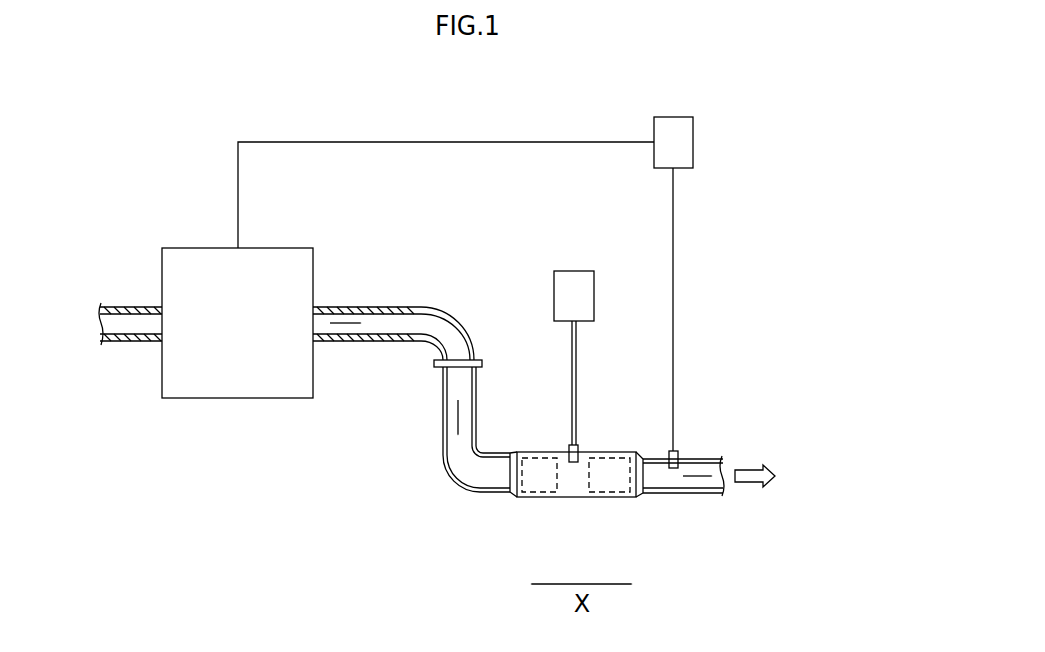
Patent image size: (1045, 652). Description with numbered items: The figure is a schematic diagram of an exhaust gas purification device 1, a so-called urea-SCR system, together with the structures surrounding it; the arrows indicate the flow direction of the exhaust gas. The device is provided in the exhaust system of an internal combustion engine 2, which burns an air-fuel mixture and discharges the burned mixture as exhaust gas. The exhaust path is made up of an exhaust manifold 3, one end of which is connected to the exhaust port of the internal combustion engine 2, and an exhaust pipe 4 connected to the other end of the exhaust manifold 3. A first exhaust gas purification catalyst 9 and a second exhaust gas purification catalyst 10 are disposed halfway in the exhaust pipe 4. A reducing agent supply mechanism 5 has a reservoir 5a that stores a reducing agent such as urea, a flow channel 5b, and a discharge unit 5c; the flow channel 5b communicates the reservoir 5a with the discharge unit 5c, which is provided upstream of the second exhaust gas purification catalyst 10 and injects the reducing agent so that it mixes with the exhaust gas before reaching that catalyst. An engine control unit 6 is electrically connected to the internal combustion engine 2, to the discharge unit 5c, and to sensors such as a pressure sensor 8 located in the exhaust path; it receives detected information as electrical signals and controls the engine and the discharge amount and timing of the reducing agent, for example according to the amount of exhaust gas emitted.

The exhaust gas purification device 1 is at (787, 131).
The internal combustion engine 2 is at (203, 403).
The exhaust manifold 3 is at (400, 307).
The exhaust pipe 4 is at (443, 410).
The reducing agent supply mechanism 5 is at (578, 332).
The reservoir 5a is at (594, 287).
The flow channel 5b is at (576, 337).
The discharge unit 5c is at (567, 447).
The engine control unit 6 is at (693, 133).
The pressure sensor 8 is at (673, 469).
The first exhaust gas purification catalyst 9 is at (543, 453).
The second exhaust gas purification catalyst 10 is at (608, 453).